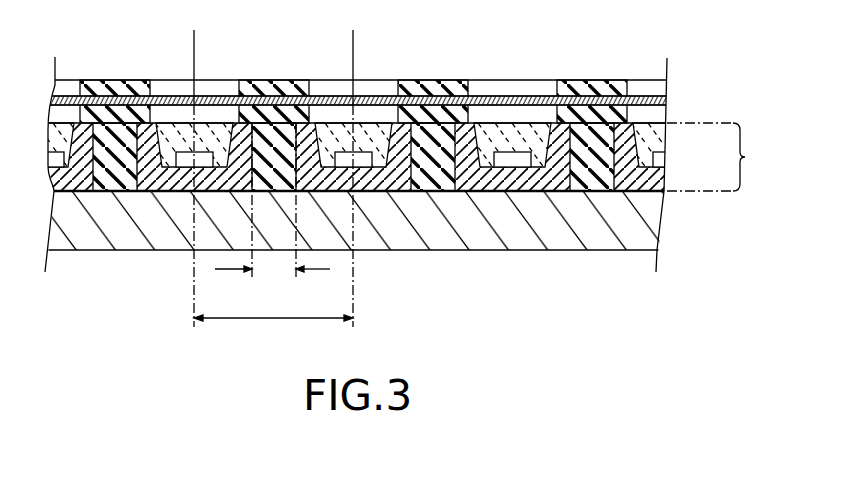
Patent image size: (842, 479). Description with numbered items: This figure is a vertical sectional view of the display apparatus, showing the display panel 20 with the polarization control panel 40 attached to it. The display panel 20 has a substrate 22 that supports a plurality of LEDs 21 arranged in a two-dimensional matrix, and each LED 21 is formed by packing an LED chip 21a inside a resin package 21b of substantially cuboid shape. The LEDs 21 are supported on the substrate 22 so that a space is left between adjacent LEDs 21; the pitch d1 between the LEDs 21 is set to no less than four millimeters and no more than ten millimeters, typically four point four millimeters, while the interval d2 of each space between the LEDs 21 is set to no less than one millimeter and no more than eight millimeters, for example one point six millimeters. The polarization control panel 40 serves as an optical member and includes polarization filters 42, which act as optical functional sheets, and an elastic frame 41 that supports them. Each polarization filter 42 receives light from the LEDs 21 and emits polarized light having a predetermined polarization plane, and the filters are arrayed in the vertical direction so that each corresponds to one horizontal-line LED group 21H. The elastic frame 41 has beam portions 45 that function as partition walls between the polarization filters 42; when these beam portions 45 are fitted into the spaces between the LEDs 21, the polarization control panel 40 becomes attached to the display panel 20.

The display panel 20 is at (364, 193).
The LED 21 is at (364, 166).
The LED chip 21a is at (508, 157).
The resin package 21b is at (377, 171).
The horizontal-line LED group 21H is at (731, 157).
The substrate 22 is at (512, 246).
The polarization control panel 40 is at (385, 64).
The elastic frame 41 is at (132, 84).
The polarization filter 42 is at (666, 101).
The beam portion 45 is at (108, 191).
The pitch d1 is at (273, 332).
The interval d2 is at (272, 212).